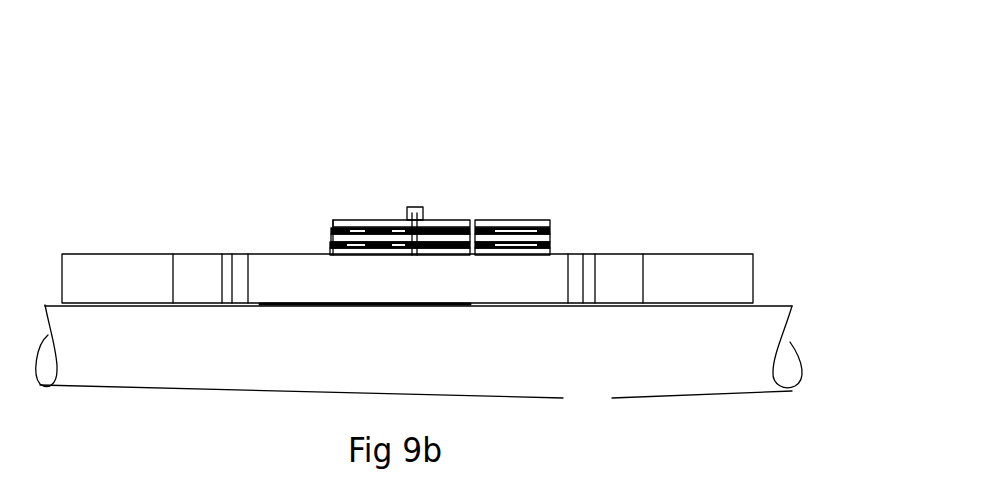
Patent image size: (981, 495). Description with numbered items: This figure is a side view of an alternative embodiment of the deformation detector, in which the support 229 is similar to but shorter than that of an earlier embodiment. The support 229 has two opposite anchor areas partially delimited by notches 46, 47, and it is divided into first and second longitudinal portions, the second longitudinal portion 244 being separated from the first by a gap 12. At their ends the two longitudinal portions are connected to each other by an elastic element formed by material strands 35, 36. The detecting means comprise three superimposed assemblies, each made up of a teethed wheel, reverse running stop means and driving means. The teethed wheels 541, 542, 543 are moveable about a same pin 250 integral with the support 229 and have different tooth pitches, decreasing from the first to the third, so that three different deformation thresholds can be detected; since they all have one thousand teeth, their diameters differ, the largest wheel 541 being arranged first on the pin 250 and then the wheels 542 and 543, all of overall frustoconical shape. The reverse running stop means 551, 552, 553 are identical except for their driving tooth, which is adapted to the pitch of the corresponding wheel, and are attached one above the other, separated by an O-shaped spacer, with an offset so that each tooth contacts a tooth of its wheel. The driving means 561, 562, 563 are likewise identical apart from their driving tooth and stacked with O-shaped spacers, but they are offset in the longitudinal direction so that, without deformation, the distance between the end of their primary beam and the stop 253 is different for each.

The gap 12 is at (240, 293).
The material strand 35 is at (590, 292).
The material strand 36 is at (225, 297).
The notch 46 is at (198, 282).
The notch 47 is at (617, 292).
The support 229 is at (285, 294).
The second longitudinal portion 244 is at (419, 351).
The pin 250 is at (417, 207).
The stop 253 is at (414, 255).
The teethed wheel 541 is at (441, 250).
The teethed wheel 542 is at (453, 238).
The teethed wheel 543 is at (440, 222).
The reverse running stop means 551 is at (550, 248).
The reverse running stop means 552 is at (550, 237).
The reverse running stop means 553 is at (520, 227).
The driving means 561 is at (372, 250).
The driving means 562 is at (331, 235).
The driving means 563 is at (372, 220).